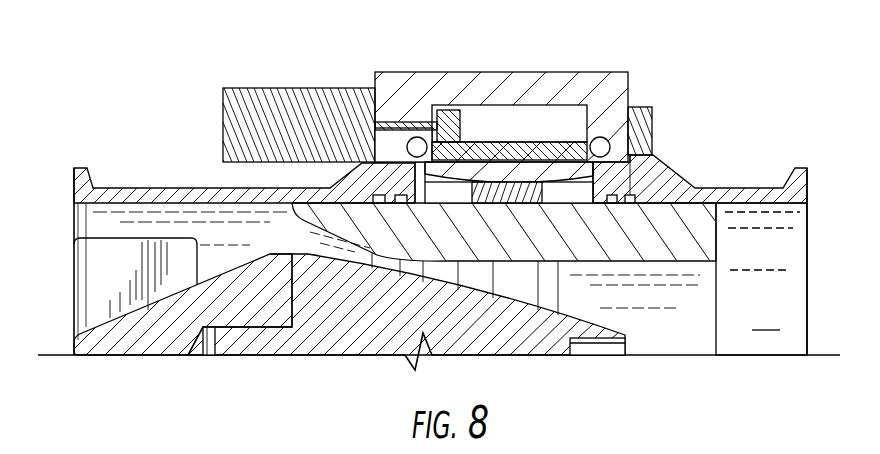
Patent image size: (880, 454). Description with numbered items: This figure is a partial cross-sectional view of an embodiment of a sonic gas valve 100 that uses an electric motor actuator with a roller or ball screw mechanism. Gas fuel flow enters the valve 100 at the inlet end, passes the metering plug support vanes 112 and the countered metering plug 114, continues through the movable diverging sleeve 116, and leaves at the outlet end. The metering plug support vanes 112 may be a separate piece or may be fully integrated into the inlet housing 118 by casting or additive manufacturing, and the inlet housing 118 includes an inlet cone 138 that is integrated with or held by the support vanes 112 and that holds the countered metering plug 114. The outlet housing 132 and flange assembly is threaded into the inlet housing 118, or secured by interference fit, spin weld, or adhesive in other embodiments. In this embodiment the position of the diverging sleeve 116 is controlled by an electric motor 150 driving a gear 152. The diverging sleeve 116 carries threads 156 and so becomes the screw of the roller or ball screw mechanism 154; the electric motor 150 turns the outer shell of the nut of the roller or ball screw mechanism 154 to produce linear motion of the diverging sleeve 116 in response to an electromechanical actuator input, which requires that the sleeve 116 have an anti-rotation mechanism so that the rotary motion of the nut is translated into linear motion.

The valve 100 is at (153, 70).
The metering plug support vanes 112 is at (109, 262).
The countered metering plug 114 is at (557, 335).
The diverging sleeve 116 is at (693, 227).
The inlet housing 118 is at (170, 194).
The outlet housing 132 is at (763, 188).
The inlet cone 138 is at (128, 330).
The electric motor 150 is at (322, 100).
The gear 152 is at (448, 115).
The roller or ball screw mechanism 154 is at (537, 150).
The threads 156 is at (497, 187).